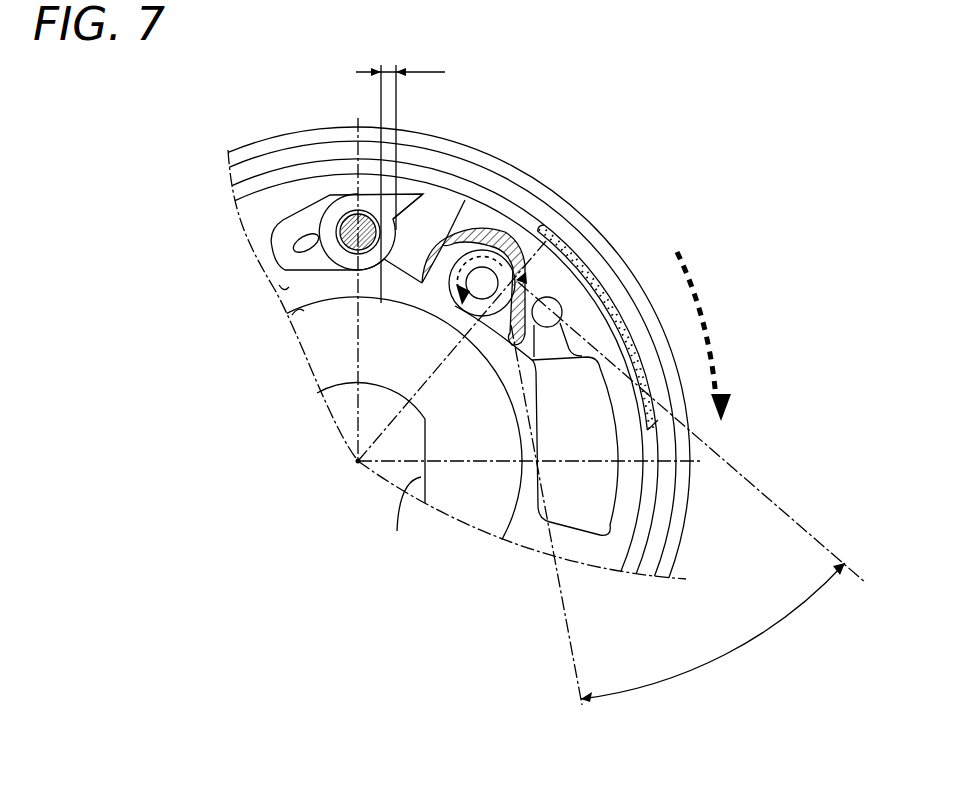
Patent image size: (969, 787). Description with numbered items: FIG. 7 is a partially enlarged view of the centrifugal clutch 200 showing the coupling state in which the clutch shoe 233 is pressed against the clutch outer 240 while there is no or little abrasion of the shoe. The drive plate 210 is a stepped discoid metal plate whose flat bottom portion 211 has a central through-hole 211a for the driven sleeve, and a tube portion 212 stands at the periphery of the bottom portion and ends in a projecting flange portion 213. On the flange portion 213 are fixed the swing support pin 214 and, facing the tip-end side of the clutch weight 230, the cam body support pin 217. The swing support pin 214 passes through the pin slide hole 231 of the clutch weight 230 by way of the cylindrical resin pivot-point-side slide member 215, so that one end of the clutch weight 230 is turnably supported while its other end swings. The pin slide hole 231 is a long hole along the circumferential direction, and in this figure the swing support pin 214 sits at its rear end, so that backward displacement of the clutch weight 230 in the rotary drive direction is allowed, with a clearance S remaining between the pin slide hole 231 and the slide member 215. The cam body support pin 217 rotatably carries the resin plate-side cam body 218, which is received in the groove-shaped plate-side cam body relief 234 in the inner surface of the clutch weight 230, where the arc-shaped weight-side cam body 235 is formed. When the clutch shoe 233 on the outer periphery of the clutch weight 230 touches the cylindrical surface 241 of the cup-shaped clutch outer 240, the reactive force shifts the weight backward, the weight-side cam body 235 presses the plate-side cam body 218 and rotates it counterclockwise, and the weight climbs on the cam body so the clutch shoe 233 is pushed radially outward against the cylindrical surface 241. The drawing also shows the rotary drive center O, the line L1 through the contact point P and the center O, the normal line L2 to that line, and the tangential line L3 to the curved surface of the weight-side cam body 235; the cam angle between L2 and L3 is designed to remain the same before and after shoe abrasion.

The centrifugal clutch 200 is at (236, 108).
The drive plate 210 is at (240, 200).
The bottom portion 211 is at (466, 521).
The through-hole 211a is at (397, 529).
The tube portion 212 is at (290, 313).
The flange portion 213 is at (280, 285).
The swing support pin 214 is at (349, 193).
The pivot-point-side slide member 215 is at (386, 204).
The cam body support pin 217 is at (494, 271).
The plate-side cam body 218 is at (461, 316).
The clutch weight 230 is at (296, 215).
The pin slide hole 231 is at (424, 193).
The clutch shoe 233 is at (540, 227).
The plate-side cam body relief 234 is at (477, 226).
The weight-side cam body 235 is at (483, 318).
The clutch outer 240 is at (420, 137).
The cylindrical surface 241 is at (650, 506).
The clearance S is at (400, 139).
The contact point P is at (520, 278).
The rotary drive center O is at (355, 461).
The line passing through contact point and rotary drive center L1 is at (432, 412).
The normal line L2 is at (818, 540).
The tangential line L3 is at (572, 645).